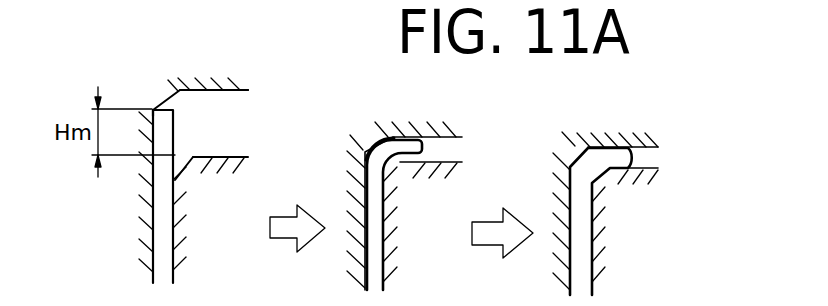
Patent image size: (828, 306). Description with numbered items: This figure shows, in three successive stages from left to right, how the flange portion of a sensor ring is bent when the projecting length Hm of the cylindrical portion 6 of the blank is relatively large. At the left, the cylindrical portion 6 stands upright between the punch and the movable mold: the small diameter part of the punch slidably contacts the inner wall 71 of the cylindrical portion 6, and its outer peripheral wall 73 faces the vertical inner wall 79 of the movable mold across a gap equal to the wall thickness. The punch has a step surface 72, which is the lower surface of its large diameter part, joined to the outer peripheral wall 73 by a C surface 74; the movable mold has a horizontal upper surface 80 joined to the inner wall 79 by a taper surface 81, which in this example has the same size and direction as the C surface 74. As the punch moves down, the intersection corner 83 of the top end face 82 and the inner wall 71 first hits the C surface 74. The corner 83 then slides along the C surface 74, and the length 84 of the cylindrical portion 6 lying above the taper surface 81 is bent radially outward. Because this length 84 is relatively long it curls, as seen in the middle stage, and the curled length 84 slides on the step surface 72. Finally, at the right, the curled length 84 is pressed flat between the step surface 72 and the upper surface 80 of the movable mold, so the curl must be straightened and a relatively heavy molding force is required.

The cylindrical portion 6 is at (162, 236).
The inner wall 71 is at (158, 270).
The step surface 72 is at (231, 91).
The outer peripheral wall 73 is at (153, 199).
The C surface 74 is at (172, 96).
The vertical inner wall 79 is at (168, 195).
The horizontal upper surface 80 is at (226, 157).
The taper surface 81 is at (182, 165).
The top end face 82 is at (166, 100).
The intersection corner 83 is at (153, 110).
The length of the cylindrical portion 84 is at (156, 138).